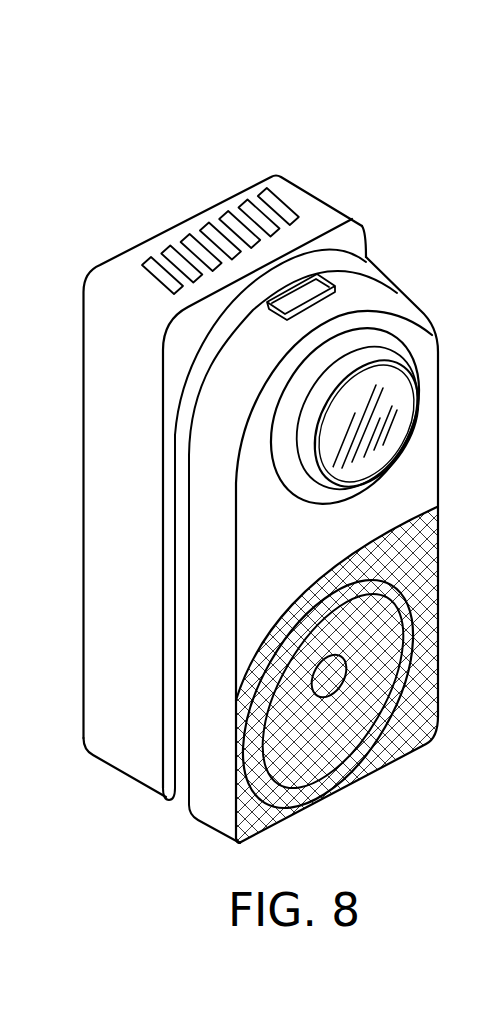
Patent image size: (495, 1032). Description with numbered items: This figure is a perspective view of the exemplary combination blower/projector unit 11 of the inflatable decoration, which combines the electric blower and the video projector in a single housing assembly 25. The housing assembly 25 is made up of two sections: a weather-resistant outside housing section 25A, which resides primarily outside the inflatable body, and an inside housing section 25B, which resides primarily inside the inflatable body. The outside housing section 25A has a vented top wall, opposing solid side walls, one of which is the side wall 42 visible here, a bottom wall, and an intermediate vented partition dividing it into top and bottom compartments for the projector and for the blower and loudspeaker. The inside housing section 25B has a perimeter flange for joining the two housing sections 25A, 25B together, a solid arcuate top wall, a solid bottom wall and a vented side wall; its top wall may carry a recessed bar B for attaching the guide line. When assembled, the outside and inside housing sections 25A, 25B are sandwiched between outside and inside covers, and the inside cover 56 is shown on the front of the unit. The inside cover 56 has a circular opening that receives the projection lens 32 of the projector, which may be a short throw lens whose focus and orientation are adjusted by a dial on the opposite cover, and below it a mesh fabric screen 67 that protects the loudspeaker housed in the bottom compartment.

The blower/projector unit 11 is at (279, 111).
The housing assembly 25 is at (410, 270).
The outside housing section 25A is at (103, 317).
The inside housing section 25B is at (203, 807).
The side wall 42 is at (136, 535).
The inside cover 56 is at (428, 481).
The recessed bar B is at (273, 302).
The projection lens 32 is at (332, 453).
The mesh fabric screen 67 is at (414, 742).